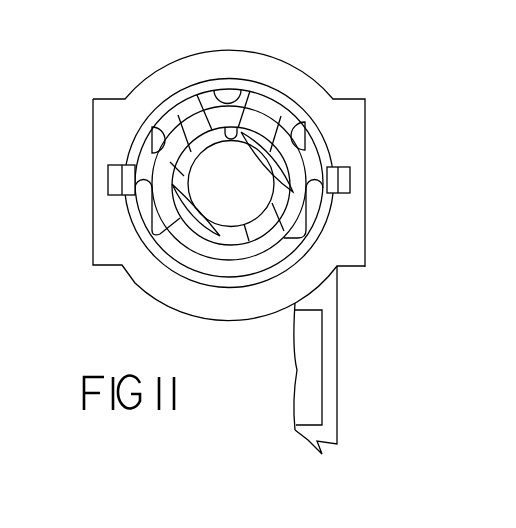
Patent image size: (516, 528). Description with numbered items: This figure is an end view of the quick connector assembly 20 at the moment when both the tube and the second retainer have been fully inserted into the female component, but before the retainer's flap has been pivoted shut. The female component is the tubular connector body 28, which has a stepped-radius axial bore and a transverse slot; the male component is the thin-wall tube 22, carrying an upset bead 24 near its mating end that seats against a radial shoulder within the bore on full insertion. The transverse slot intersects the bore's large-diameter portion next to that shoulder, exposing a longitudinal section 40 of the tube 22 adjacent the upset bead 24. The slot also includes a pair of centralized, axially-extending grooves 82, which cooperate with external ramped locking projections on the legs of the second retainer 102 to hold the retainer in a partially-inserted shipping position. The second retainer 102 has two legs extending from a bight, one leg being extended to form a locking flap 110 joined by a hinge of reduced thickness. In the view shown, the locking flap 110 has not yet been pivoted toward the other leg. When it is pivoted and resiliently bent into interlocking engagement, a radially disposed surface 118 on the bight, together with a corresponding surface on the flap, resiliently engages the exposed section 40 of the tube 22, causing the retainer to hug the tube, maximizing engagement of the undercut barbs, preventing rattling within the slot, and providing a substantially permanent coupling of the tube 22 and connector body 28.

The quick connector assembly 20 is at (100, 80).
The thin-wall tube 22 is at (250, 262).
The upset bead 24 is at (141, 285).
The tubular connector body 28 is at (340, 86).
The longitudinal section 40 is at (164, 243).
The grooves 82 is at (112, 177).
The second retainer 102 is at (352, 294).
The locking flap 110 is at (338, 367).
The radially disposed surface 118 is at (235, 127).